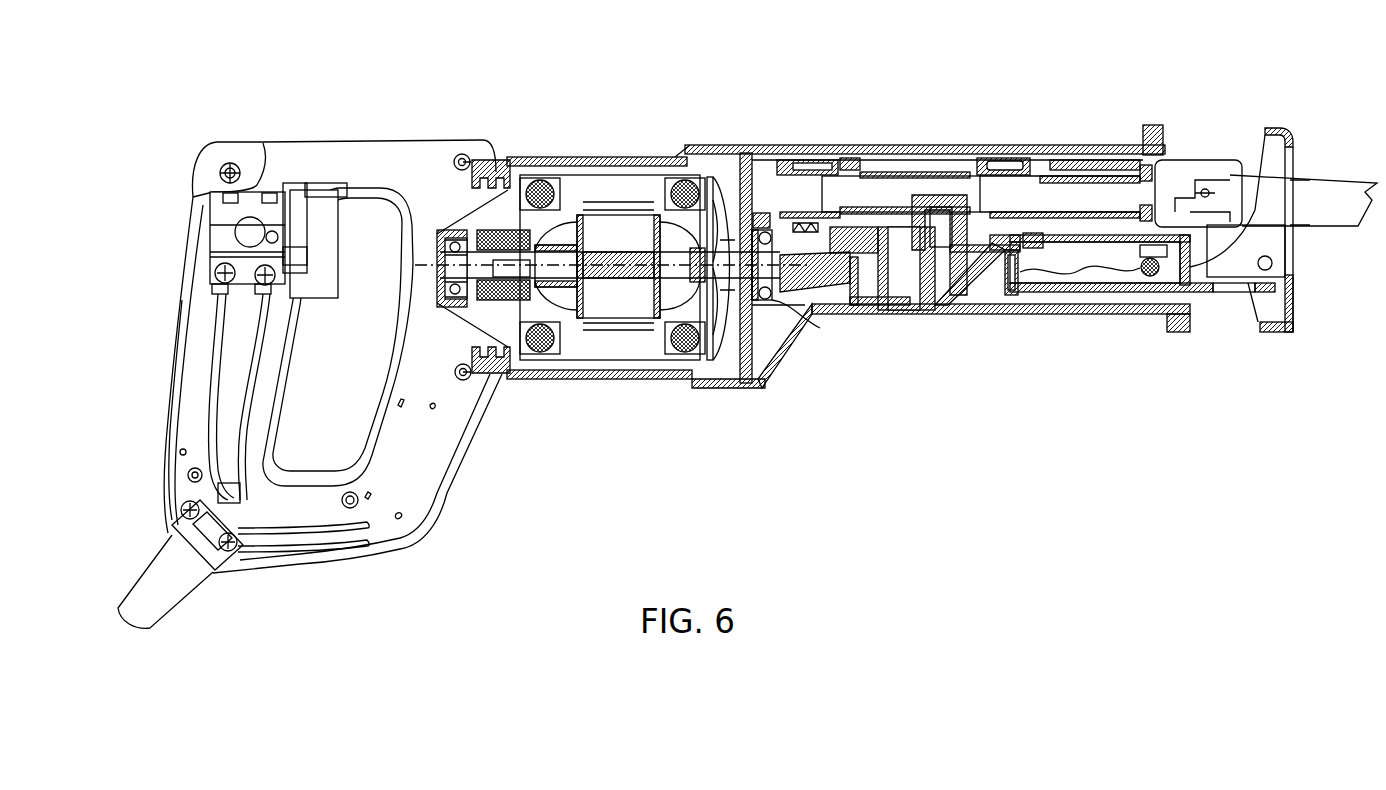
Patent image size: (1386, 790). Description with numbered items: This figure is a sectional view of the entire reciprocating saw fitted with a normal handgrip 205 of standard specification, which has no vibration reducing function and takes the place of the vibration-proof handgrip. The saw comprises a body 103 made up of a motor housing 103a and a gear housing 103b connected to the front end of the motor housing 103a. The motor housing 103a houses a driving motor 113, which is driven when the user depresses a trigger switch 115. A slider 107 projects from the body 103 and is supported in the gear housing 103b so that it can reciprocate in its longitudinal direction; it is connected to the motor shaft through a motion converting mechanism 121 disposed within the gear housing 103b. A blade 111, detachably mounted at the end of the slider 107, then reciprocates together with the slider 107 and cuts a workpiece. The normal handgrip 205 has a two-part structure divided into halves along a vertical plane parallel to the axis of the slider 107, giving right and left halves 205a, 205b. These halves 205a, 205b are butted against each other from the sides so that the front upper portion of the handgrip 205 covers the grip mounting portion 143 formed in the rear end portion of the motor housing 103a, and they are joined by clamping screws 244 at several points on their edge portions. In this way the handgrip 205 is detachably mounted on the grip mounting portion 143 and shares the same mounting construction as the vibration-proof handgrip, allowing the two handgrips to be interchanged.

The normal handgrip 205 is at (296, 140).
The right half of the handgrip 205a is at (178, 290).
The left half of the handgrip 205b is at (212, 158).
The clamping screws 244 is at (220, 174).
The trigger switch 115 is at (330, 296).
The motor housing 103a is at (598, 157).
The body 103 is at (735, 140).
The slider 107 is at (862, 182).
The gear housing 103b is at (1005, 142).
The blade 111 is at (1307, 177).
The motion converting mechanism 121 is at (840, 293).
The grip mounting portion 143 is at (505, 374).
The driving motor 113 is at (613, 318).